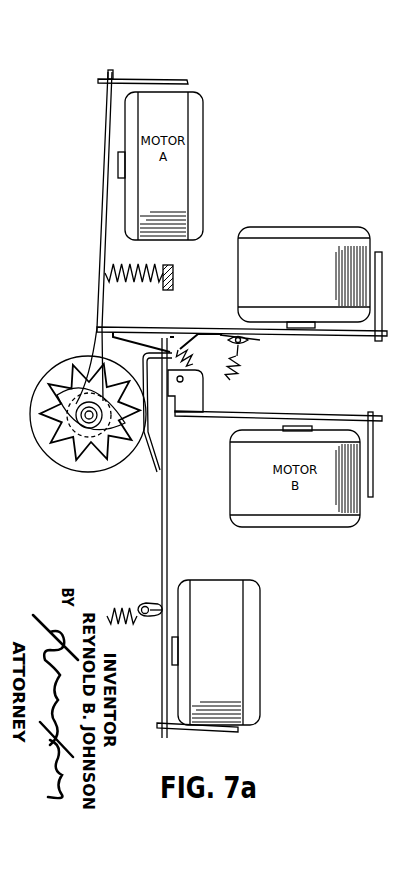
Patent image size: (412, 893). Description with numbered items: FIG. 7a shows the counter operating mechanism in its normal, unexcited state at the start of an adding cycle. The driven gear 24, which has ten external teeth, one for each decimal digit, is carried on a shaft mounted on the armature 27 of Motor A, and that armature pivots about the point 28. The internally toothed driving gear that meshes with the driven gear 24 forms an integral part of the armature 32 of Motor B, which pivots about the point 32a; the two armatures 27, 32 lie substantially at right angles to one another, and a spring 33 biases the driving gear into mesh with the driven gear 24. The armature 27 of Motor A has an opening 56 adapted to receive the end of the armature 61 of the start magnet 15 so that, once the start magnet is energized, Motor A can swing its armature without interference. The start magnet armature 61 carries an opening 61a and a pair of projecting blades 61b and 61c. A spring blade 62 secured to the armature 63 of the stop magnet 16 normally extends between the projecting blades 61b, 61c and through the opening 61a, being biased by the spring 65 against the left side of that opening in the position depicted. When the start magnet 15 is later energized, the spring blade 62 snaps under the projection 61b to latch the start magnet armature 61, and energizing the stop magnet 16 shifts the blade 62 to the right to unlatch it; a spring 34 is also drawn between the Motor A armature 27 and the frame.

The pivot point 28 is at (108, 72).
The armature of Motor A 27 is at (101, 228).
The opening 56 is at (94, 322).
The spring 34 is at (148, 267).
The start magnet 15 is at (302, 227).
The armature of the start magnet 61 is at (303, 337).
The opening 61a is at (177, 327).
The projecting blade 61b is at (148, 330).
The projecting blade 61c is at (190, 332).
The spring 33 is at (194, 359).
The driven gear 24 is at (92, 445).
The spring blade 62 is at (168, 425).
The armature of Motor B 32 is at (295, 413).
The pivot point 32a is at (372, 414).
The armature of the stop magnet 63 is at (169, 548).
The spring 65 is at (121, 607).
The stop magnet 16 is at (260, 657).